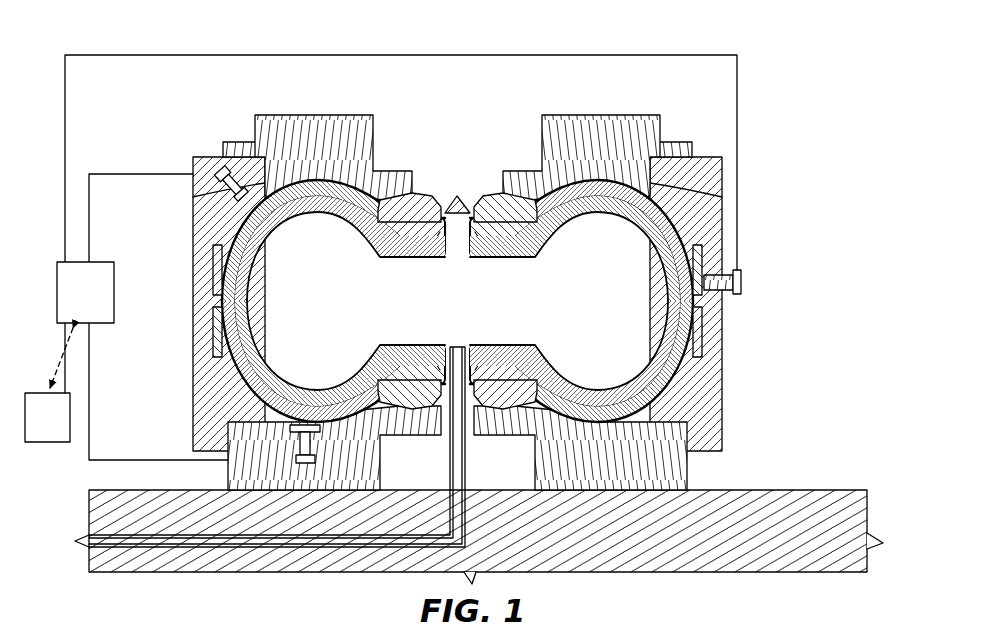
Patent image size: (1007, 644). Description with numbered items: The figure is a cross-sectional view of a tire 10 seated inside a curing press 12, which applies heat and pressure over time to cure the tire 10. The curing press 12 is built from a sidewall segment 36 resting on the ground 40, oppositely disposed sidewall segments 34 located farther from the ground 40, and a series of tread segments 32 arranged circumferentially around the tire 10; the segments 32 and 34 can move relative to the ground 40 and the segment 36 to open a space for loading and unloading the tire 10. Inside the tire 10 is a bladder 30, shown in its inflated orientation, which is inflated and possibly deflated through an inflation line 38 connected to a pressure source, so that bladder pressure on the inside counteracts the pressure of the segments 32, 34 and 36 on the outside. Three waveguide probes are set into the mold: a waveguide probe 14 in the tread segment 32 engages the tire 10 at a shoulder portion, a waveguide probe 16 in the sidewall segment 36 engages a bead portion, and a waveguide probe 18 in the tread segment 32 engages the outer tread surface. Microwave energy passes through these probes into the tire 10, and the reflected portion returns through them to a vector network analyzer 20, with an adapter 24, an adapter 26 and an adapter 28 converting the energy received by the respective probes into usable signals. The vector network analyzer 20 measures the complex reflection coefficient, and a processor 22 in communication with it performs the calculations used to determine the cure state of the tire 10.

The tire 10 is at (680, 217).
The curing press 12 is at (726, 45).
The waveguide probe 14 is at (193, 211).
The waveguide probe 16 is at (332, 438).
The waveguide probe 18 is at (727, 296).
The vector network analyzer 20 is at (85, 292).
The processor 22 is at (47, 417).
The adapter 24 is at (229, 171).
The adapter 26 is at (300, 460).
The adapter 28 is at (742, 287).
The bladder 30 is at (641, 217).
The tread segments 32 is at (198, 360).
The sidewall segments 34 is at (372, 138).
The sidewall segment 36 is at (688, 478).
The inflation line 38 is at (246, 548).
The ground 40 is at (794, 488).